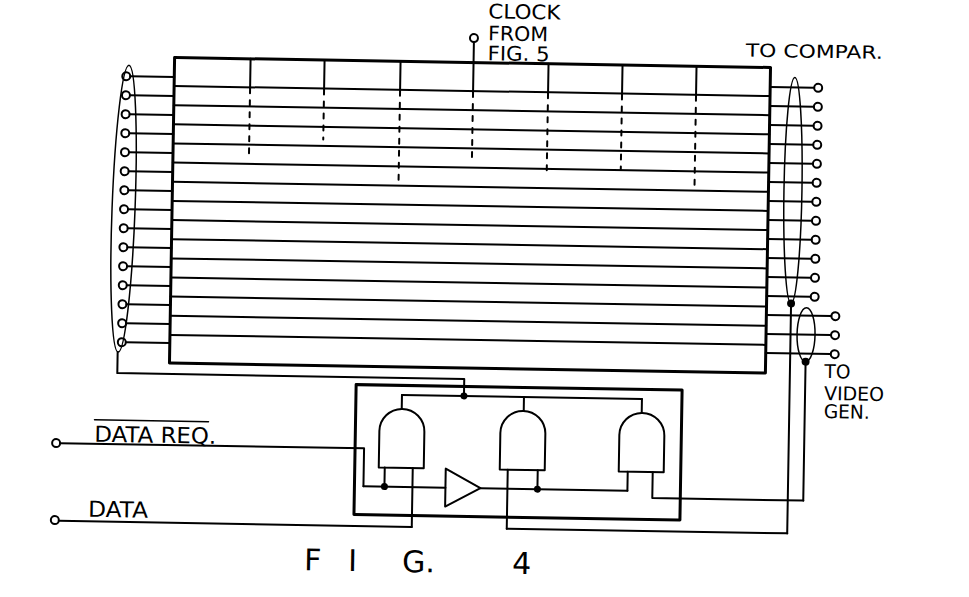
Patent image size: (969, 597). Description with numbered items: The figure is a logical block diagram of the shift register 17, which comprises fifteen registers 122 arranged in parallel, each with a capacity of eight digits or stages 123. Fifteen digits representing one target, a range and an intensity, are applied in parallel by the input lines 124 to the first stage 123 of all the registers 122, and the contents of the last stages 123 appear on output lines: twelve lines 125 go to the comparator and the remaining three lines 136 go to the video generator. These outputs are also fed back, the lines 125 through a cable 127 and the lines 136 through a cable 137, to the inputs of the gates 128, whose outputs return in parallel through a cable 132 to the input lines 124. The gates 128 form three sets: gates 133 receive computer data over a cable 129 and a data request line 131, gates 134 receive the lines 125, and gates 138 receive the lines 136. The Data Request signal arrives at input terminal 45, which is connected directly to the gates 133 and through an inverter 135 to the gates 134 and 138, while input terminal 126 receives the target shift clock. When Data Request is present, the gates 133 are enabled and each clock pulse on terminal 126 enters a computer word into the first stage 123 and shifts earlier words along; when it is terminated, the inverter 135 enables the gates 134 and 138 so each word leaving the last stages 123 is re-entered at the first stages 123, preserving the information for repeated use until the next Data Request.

The shift register 17 is at (885, 556).
The input terminal 45 is at (60, 446).
The register 122 is at (685, 348).
The stage 123 is at (362, 68).
The input lines 124 is at (172, 201).
The lines 125 is at (768, 197).
The input terminal 126 is at (467, 37).
The cable 127 is at (702, 529).
The gates 128 is at (685, 457).
The cable 129 is at (312, 514).
The data request line 131 is at (304, 451).
The cable 132 is at (336, 380).
The gates 133 is at (422, 457).
The gates 134 is at (543, 457).
The inverter 135 is at (468, 486).
The lines 136 is at (780, 322).
The cable 137 is at (815, 417).
The gates 138 is at (662, 457).